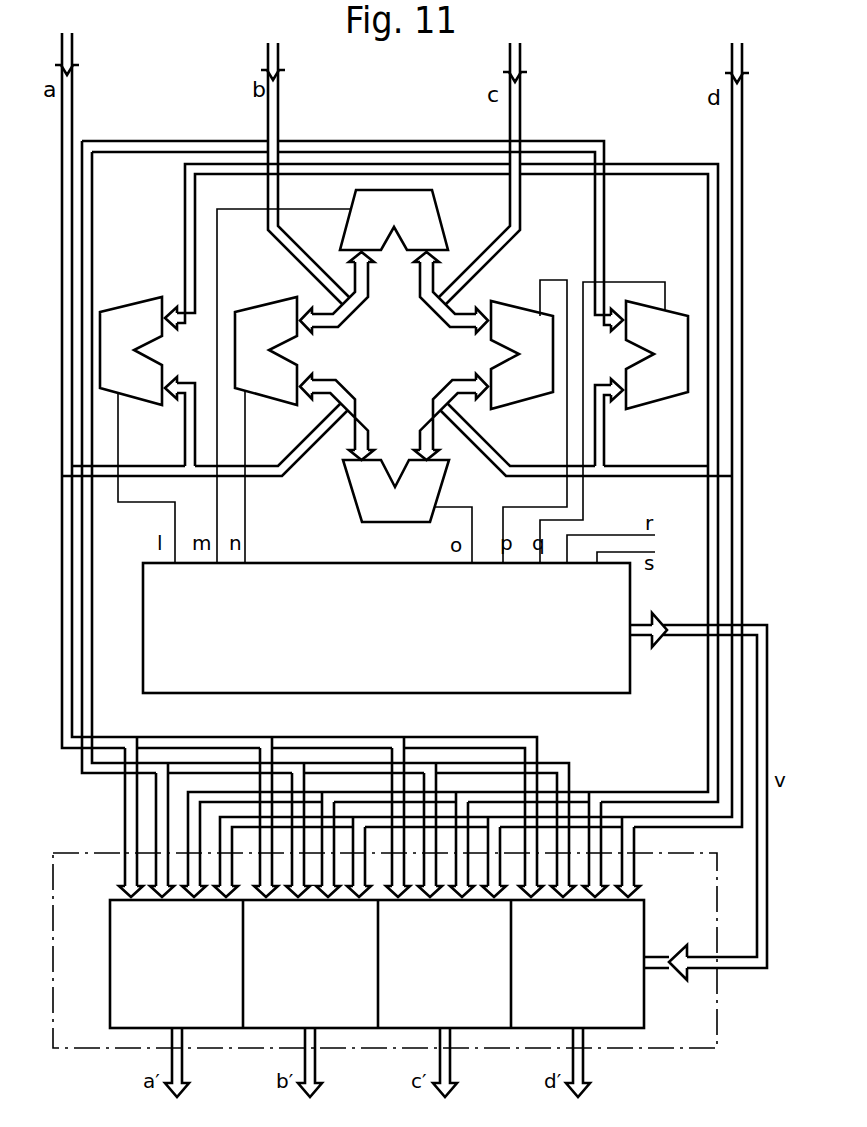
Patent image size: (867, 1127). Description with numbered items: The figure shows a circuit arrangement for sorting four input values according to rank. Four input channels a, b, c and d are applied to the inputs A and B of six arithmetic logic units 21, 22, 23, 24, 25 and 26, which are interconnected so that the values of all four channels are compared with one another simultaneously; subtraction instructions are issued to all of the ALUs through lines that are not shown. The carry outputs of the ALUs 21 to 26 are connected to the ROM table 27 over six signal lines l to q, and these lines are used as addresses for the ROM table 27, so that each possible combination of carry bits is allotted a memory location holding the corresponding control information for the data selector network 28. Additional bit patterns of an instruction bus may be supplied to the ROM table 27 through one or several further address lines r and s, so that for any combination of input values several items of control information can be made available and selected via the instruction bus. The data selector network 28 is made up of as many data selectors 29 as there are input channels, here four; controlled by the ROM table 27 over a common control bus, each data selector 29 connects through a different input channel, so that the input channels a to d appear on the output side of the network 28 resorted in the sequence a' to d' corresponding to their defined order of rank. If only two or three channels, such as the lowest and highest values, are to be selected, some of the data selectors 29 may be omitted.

The arithmetic logic unit 21 is at (423, 212).
The arithmetic logic unit 22 is at (125, 316).
The arithmetic logic unit 23 is at (259, 316).
The arithmetic logic unit 24 is at (520, 316).
The arithmetic logic unit 25 is at (675, 317).
The arithmetic logic unit 26 is at (372, 506).
The ROM table 27 is at (614, 686).
The data selector network 28 is at (717, 1033).
The data selector 29 is at (277, 913).